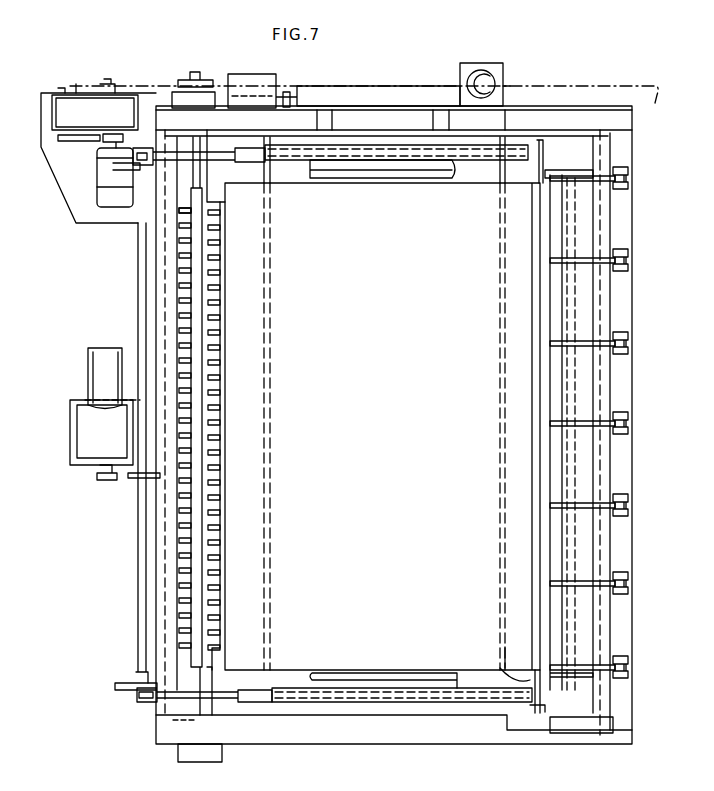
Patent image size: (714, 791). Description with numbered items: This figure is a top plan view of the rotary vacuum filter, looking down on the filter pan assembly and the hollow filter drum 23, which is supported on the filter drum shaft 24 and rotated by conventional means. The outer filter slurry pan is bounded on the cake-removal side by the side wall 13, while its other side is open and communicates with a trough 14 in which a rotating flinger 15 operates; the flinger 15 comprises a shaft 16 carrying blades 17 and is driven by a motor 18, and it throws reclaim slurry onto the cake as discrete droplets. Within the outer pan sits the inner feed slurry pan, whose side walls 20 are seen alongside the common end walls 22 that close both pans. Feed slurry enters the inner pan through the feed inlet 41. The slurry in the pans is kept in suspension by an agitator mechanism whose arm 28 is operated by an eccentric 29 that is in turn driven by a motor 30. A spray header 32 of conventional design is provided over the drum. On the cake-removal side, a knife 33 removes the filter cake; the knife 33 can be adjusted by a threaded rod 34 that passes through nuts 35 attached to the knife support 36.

The side wall 13 is at (563, 710).
The trough 14 is at (178, 612).
The flinger 15 is at (185, 570).
The shaft 16 is at (203, 641).
The blades 17 is at (185, 584).
The motor 18 is at (95, 176).
The side walls 20 is at (270, 528).
The common end walls 22 is at (305, 122).
The filter drum 23 is at (244, 690).
The filter drum shaft 24 is at (395, 122).
The arm 28 is at (227, 150).
The eccentric 29 is at (128, 696).
The motor 30 is at (100, 431).
The spray header 32 is at (506, 662).
The knife 33 is at (587, 231).
The threaded rod 34 is at (585, 341).
The nuts 35 is at (628, 352).
The knife support 36 is at (628, 392).
The feed inlet 41 is at (505, 83).